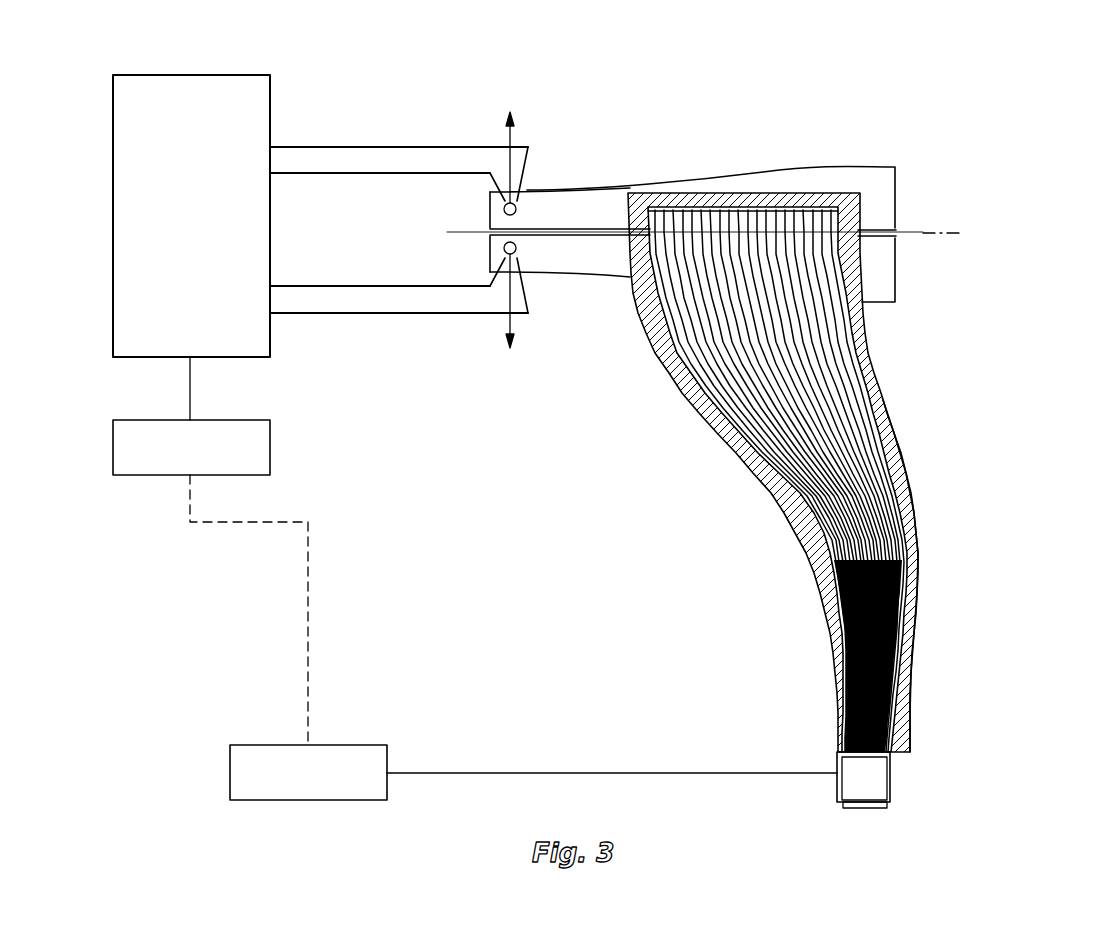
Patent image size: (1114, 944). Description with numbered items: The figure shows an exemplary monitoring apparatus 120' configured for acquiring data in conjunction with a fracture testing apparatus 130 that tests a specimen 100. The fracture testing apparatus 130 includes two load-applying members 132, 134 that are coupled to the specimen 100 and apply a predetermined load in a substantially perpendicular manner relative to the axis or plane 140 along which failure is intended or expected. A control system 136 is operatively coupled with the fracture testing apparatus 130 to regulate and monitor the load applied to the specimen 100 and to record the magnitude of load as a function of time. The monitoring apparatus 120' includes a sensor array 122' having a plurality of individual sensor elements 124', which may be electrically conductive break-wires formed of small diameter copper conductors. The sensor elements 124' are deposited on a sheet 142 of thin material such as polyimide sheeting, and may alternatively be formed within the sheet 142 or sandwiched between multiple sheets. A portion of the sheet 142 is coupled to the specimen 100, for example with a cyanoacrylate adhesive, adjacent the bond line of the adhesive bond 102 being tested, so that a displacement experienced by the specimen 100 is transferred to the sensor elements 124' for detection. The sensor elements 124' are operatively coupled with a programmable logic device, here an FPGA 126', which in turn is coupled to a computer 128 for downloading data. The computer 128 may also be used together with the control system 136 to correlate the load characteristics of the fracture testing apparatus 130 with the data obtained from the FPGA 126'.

The specimen 100 is at (920, 179).
The adhesive bond 102 is at (877, 238).
The monitoring apparatus 120' is at (685, 412).
The sensor array 122' is at (743, 422).
The sensor elements 124' is at (776, 420).
The FPGA 126' is at (949, 780).
The computer 128 is at (353, 745).
The fracture testing apparatus 130 is at (301, 130).
The load-applying member 132 is at (400, 147).
The load-applying member 134 is at (362, 313).
The control system 136 is at (270, 448).
The axis or plane 140 is at (922, 233).
The sheet 142 is at (897, 420).